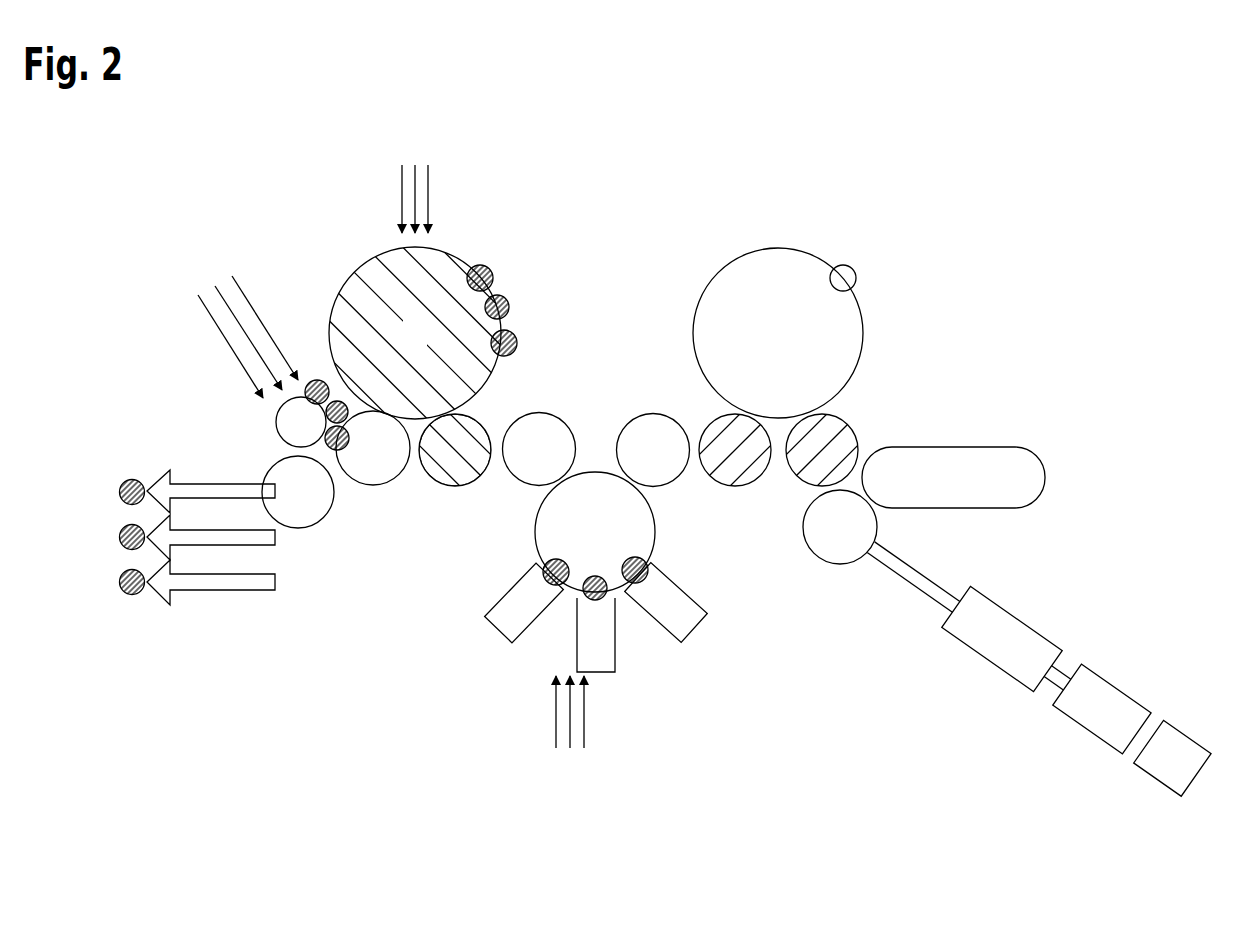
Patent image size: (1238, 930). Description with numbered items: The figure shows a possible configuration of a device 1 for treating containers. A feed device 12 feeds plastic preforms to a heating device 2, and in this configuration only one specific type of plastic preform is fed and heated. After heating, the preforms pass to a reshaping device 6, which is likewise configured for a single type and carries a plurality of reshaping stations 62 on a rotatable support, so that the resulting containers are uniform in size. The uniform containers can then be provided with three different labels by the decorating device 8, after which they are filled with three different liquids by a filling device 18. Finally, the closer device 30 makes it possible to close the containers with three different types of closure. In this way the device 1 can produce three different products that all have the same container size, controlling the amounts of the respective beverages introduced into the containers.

The device 1 is at (658, 210).
The filling device 18 is at (467, 238).
The reshaping stations 62 is at (862, 262).
The reshaping device 6 is at (870, 323).
The heating device 2 is at (1053, 462).
The closer device 30 is at (263, 425).
The decorating device 8 is at (515, 552).
The feed device 12 is at (1048, 617).